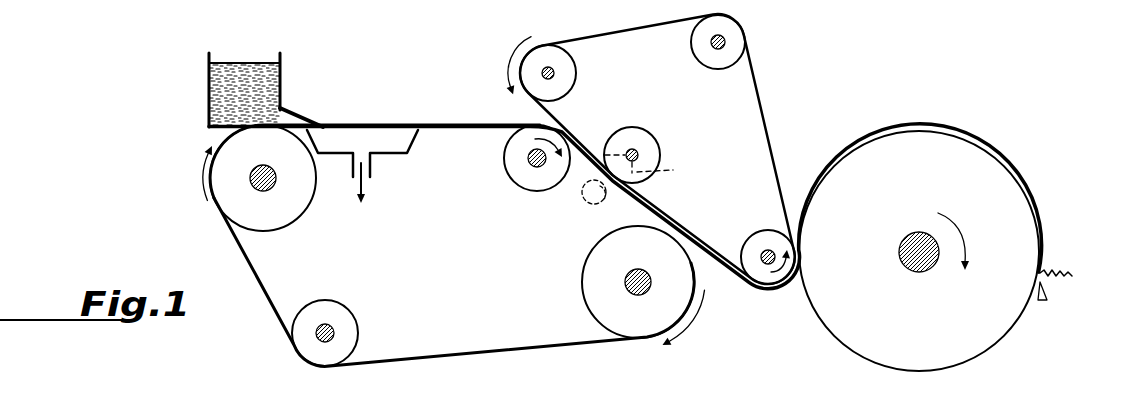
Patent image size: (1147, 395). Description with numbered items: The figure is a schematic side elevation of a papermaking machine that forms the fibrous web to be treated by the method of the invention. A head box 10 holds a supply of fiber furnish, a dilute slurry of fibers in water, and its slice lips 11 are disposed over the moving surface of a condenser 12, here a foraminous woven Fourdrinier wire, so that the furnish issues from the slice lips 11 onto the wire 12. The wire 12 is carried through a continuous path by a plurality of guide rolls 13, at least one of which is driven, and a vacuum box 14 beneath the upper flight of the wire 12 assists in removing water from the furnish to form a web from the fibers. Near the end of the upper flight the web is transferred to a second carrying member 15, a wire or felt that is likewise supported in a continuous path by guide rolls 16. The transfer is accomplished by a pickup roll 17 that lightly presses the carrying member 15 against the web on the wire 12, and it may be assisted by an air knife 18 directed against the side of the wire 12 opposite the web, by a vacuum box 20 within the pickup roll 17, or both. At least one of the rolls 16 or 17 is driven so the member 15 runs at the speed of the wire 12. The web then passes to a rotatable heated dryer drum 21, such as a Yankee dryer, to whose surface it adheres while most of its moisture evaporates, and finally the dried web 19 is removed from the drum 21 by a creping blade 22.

The head box 10 is at (281, 72).
The slice lips 11 is at (306, 112).
The condenser 12 is at (438, 124).
The guide rolls 13 is at (290, 213).
The vacuum box 14 is at (412, 142).
The second carrying member 15 is at (556, 118).
The guide rolls 16 is at (570, 75).
The pickup roll 17 is at (647, 130).
The air knife 18 is at (598, 212).
The web 19 is at (1058, 273).
The vacuum box 20 is at (676, 170).
The dryer drum 21 is at (872, 340).
The creping blade 22 is at (1043, 303).